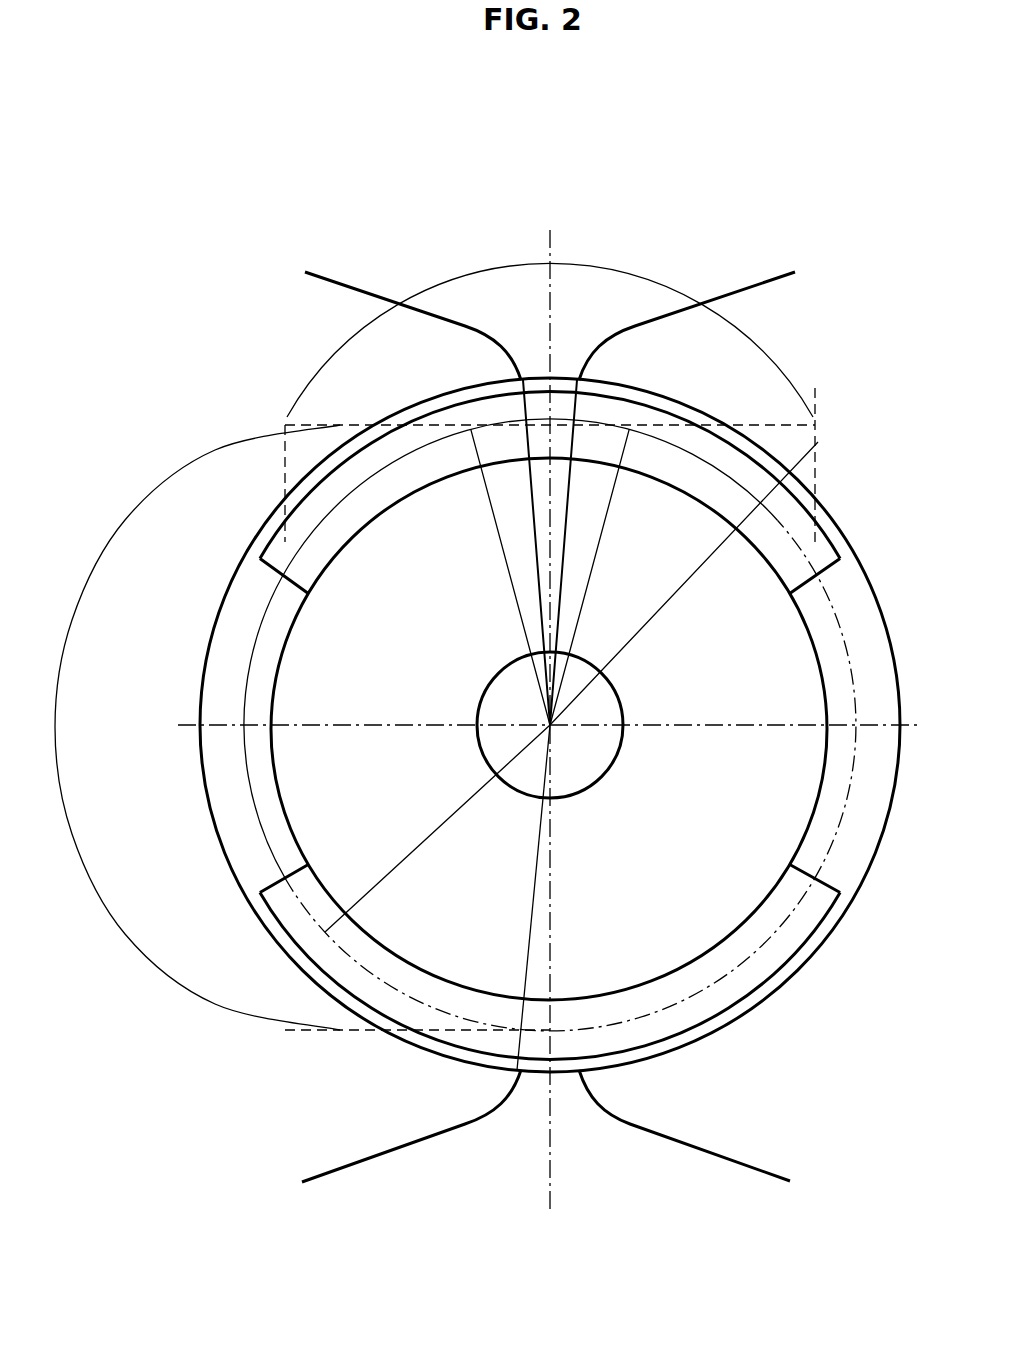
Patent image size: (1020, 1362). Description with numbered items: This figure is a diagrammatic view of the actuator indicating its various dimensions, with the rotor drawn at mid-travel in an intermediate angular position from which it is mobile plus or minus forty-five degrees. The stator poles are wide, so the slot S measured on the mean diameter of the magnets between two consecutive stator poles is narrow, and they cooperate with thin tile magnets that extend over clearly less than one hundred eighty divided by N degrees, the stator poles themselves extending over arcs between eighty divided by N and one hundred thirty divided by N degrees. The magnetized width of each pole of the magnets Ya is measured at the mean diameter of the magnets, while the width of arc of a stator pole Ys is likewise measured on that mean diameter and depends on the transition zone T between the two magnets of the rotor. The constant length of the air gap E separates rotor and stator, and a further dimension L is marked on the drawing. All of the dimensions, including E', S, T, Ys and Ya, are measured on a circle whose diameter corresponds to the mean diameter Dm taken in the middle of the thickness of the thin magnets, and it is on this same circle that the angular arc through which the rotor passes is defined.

The transition zone T is at (550, 725).
The slot width S is at (550, 727).
The pole number N is at (551, 674).
The dimension E' is at (550, 563).
The magnetized width of each magnet pole Ya is at (550, 387).
The width of arc of a stator pole Ys is at (302, 728).
The mean diameter Dm is at (571, 687).
The air gap length E is at (750, 500).
The yoke length L is at (863, 488).